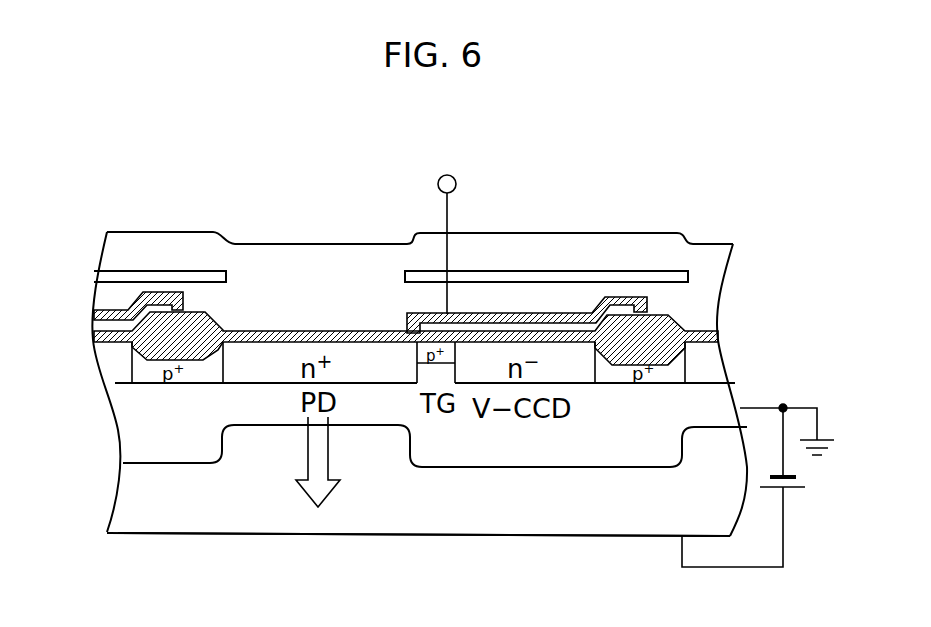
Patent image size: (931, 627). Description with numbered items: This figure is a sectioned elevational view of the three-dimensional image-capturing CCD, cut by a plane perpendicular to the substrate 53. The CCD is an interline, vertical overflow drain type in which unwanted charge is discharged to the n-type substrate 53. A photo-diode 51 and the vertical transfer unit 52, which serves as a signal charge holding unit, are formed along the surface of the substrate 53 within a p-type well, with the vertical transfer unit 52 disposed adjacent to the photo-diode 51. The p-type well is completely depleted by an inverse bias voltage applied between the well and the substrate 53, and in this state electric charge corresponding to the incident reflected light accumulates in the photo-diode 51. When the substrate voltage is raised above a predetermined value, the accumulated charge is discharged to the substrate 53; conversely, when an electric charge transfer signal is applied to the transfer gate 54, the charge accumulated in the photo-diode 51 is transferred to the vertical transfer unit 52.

The photo-diode 51 is at (257, 407).
The vertical transfer unit 52 is at (568, 447).
The substrate 53 is at (418, 510).
The transfer gate 54 is at (433, 375).